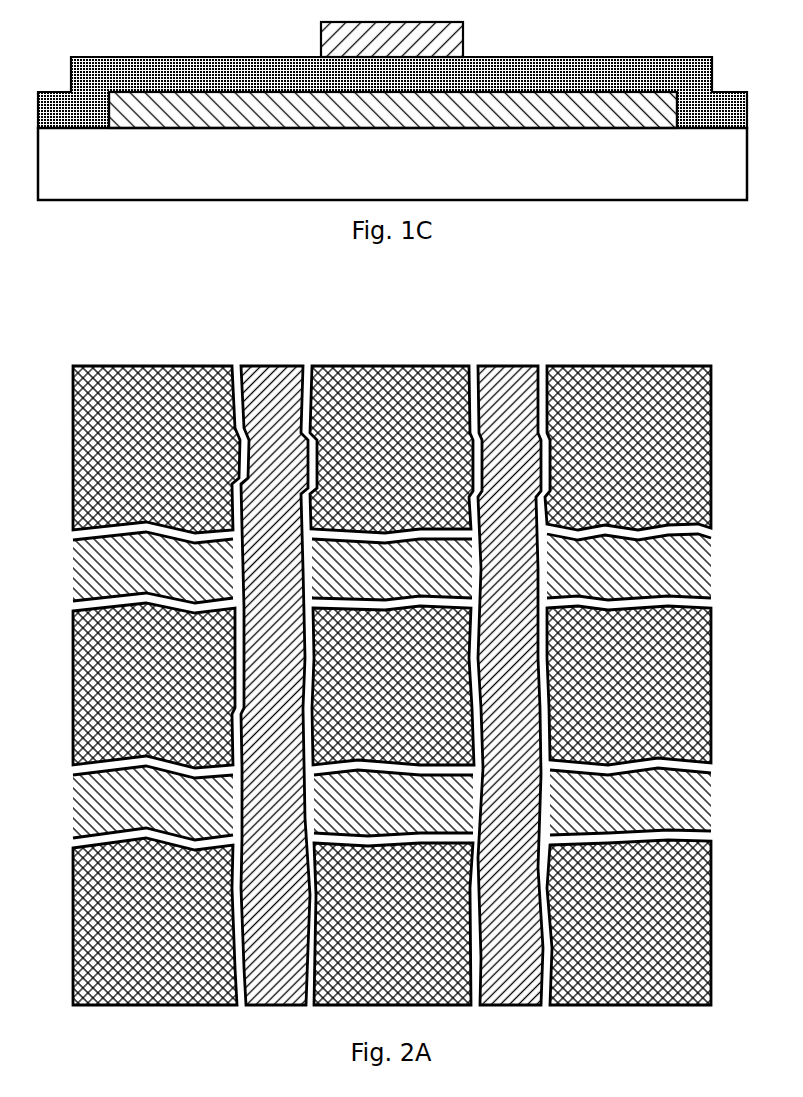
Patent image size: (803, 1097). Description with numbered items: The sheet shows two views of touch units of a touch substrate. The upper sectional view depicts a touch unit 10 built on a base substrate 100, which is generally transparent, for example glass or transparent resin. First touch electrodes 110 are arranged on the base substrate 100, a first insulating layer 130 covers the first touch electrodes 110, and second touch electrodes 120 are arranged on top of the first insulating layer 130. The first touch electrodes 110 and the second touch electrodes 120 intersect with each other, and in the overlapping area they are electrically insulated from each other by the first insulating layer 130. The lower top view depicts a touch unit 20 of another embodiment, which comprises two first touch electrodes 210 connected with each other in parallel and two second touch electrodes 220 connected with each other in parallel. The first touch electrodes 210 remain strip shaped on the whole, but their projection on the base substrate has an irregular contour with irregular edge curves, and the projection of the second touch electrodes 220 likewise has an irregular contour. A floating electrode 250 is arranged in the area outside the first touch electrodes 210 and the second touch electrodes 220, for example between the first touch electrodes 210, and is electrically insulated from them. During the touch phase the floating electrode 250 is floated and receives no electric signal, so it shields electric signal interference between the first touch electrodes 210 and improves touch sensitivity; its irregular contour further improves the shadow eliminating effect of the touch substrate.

In FIG. 1C, the touch unit 10 is at (78, 38).
In FIG. 1C, the base substrate 100 is at (392, 164).
In FIG. 1C, the first touch electrodes 110 is at (393, 110).
In FIG. 1C, the second touch electrodes 120 is at (392, 39).
In FIG. 1C, the first insulating layer 130 is at (392, 92).
In FIG. 2A, the touch unit 20 is at (113, 350).
In FIG. 2A, the first touch electrodes 210 is at (392, 686).
In FIG. 2A, the second touch electrodes 220 is at (392, 685).
In FIG. 2A, the floating electrode 250 is at (392, 685).